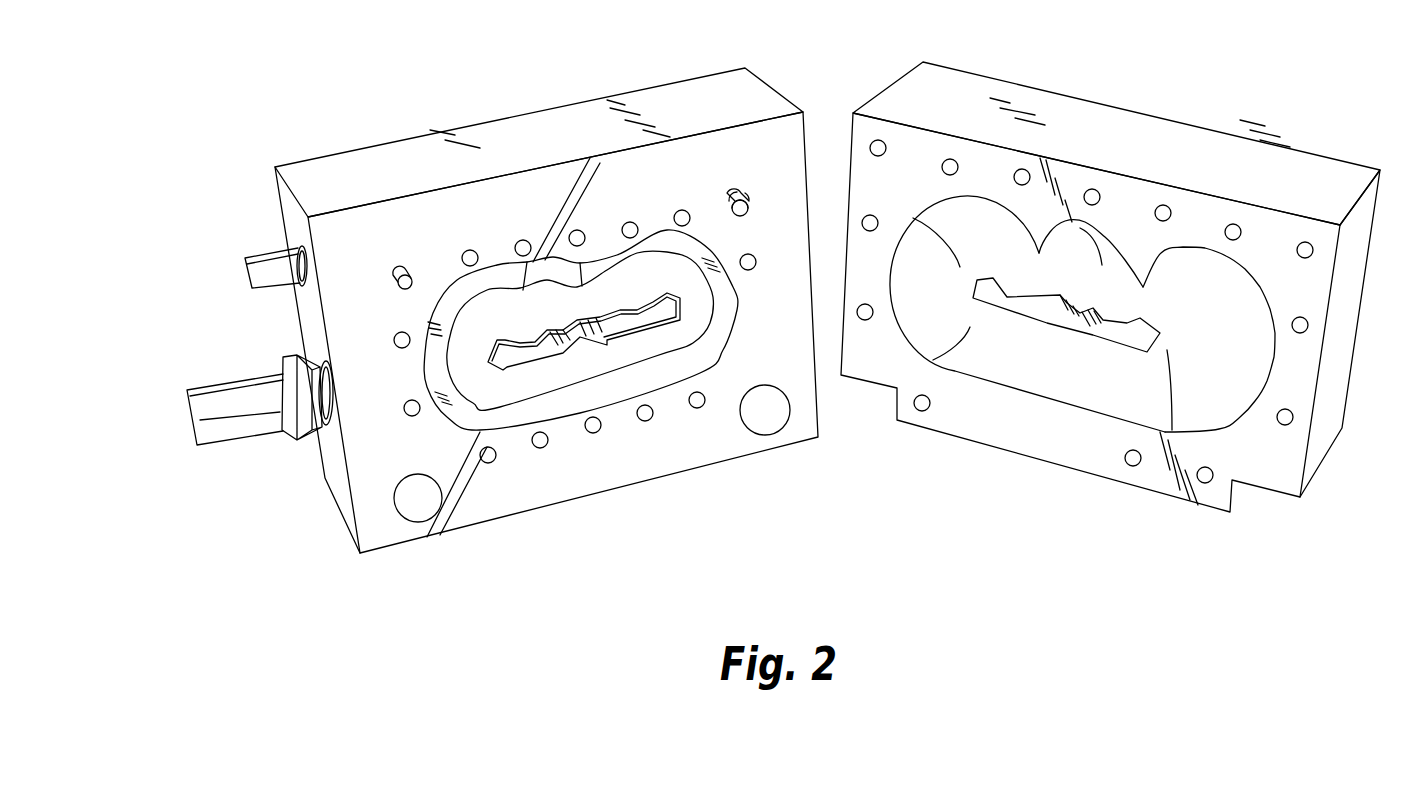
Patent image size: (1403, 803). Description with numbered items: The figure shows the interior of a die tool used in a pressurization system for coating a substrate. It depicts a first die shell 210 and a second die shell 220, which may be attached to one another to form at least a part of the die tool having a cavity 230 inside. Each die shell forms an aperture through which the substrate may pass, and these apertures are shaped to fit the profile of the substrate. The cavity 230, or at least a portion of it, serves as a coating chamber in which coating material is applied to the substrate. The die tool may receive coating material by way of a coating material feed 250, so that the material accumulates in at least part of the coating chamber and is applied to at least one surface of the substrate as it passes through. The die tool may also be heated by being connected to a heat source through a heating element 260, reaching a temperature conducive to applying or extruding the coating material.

The first die shell 210 is at (1143, 135).
The second die shell 220 is at (525, 128).
The cavity 230 is at (1045, 367).
The coating material feed 250 is at (280, 432).
The heating element 260 is at (258, 260).